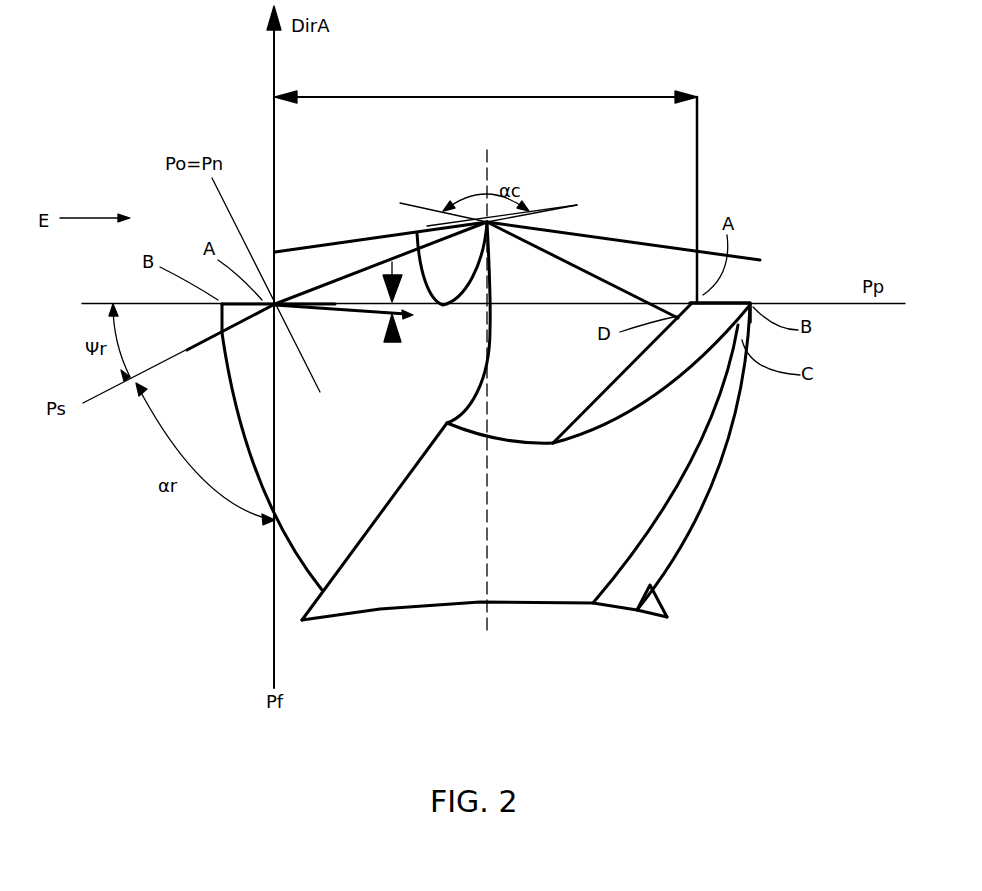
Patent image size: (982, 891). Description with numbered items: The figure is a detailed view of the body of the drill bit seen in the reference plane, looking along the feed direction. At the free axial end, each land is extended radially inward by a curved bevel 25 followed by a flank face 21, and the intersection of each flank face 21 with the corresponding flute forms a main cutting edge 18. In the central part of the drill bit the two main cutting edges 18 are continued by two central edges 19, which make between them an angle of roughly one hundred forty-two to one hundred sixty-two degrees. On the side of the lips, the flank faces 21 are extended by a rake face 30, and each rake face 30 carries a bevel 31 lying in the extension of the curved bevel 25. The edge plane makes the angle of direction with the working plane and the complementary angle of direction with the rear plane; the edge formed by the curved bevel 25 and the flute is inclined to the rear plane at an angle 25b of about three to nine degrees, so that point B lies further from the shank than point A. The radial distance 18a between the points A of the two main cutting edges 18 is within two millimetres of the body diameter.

The main cutting edge 18 is at (348, 263).
The distance along the radial direction 18a is at (486, 186).
The central edge 19 is at (578, 209).
The flank face 21 is at (610, 273).
The curved bevel 25 is at (723, 310).
The angle 25b is at (400, 342).
The rake face 30 is at (542, 390).
The bevel 31 is at (658, 365).